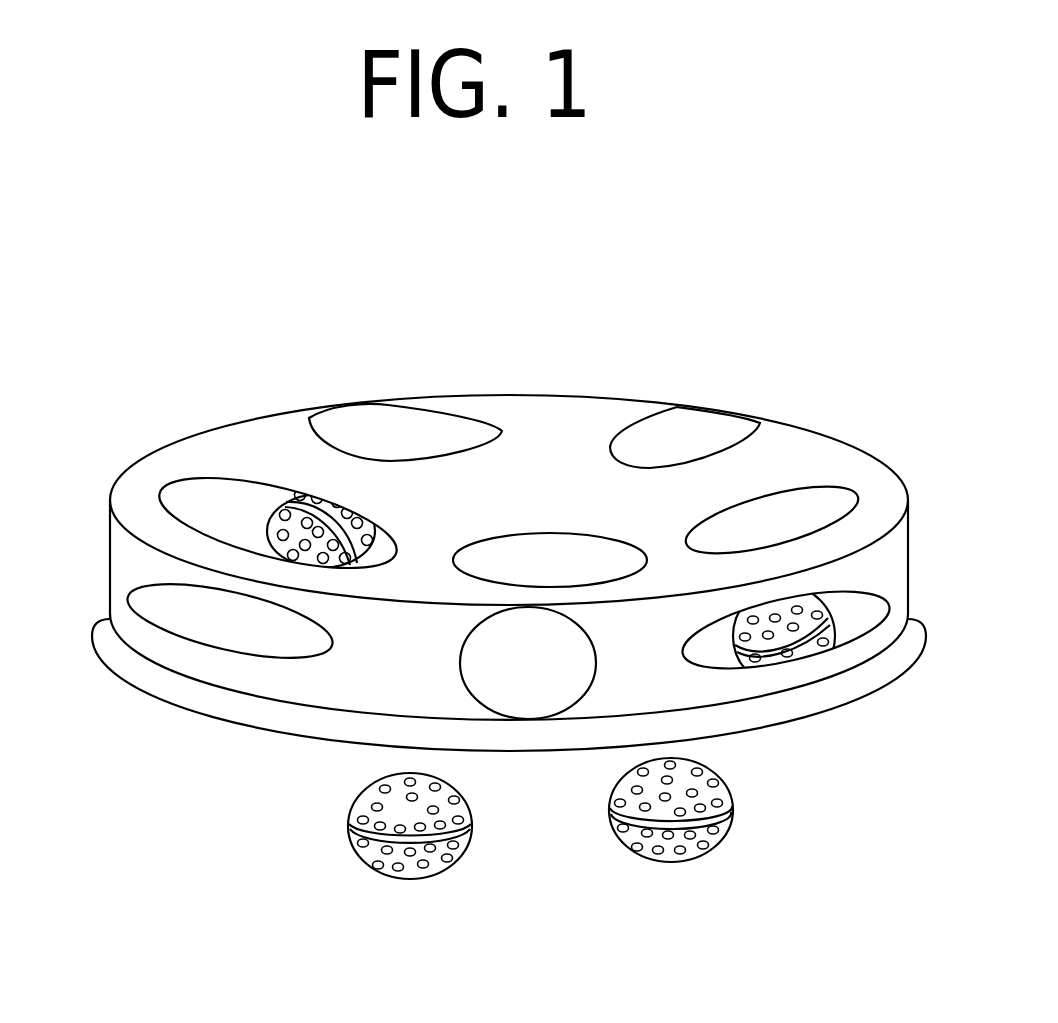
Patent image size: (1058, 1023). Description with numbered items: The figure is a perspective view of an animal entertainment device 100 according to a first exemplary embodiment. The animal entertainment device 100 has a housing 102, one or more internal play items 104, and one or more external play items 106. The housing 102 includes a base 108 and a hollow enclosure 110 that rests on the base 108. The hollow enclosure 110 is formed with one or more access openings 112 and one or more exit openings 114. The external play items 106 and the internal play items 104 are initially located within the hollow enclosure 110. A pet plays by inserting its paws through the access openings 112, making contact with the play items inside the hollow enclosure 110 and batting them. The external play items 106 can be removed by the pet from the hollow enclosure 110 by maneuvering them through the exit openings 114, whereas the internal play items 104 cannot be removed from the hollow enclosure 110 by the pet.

The animal entertainment device 100 is at (671, 247).
The housing 102 is at (193, 789).
The internal play items 104 is at (763, 638).
The external play items 106 is at (423, 865).
The base 108 is at (767, 708).
The hollow enclosure 110 is at (875, 483).
The access openings 112 is at (768, 518).
The exit openings 114 is at (490, 653).